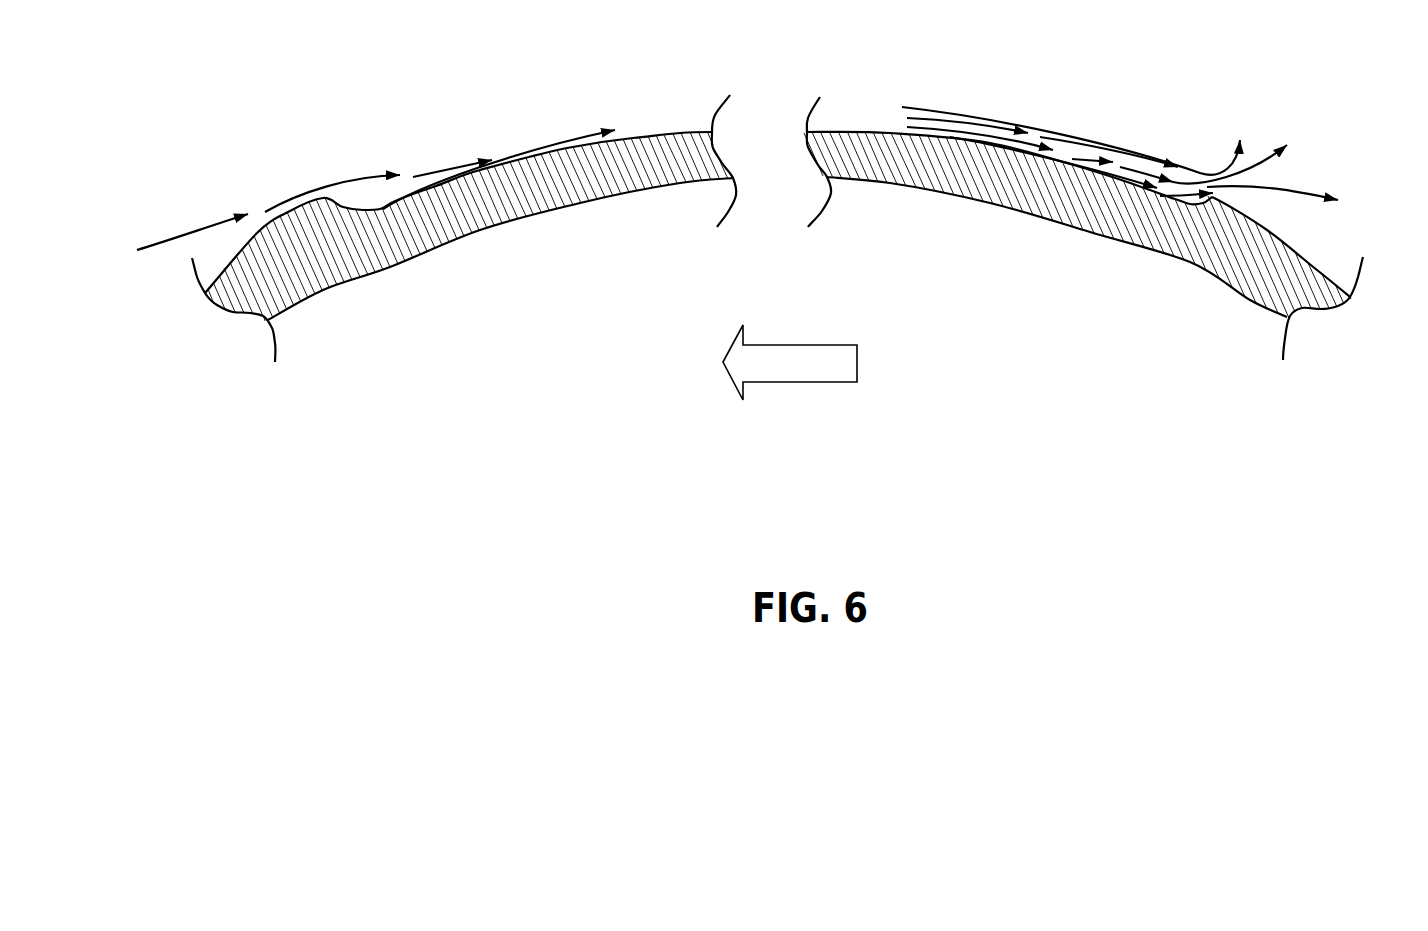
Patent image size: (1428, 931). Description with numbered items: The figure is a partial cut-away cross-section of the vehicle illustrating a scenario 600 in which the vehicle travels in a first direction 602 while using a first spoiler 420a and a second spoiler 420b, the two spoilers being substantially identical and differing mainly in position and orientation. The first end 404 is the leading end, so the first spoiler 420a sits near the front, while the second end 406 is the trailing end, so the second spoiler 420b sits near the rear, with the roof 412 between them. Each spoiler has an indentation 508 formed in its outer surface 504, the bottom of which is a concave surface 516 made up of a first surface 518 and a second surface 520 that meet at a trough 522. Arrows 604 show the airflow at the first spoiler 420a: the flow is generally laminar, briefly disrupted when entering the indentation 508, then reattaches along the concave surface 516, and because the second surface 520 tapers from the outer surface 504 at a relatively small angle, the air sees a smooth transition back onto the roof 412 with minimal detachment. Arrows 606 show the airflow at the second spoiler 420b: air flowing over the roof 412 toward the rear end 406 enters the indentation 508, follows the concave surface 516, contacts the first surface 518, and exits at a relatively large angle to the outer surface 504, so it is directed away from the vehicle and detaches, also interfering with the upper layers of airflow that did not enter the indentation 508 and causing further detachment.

The scenario 600 is at (178, 152).
The arrows 604 is at (297, 180).
The arrows 606 is at (1260, 118).
The first direction 602 is at (808, 374).
The first end 404 is at (245, 308).
The second end 406 is at (1280, 292).
The roof 412 is at (677, 183).
The first spoiler 420a is at (510, 284).
The second spoiler 420b is at (1042, 302).
The outer surface 504 is at (640, 133).
The indentation 508 is at (414, 213).
The concave surface 516 is at (515, 198).
The first surface 518 is at (1216, 200).
The second surface 520 is at (525, 172).
The trough 522 is at (1192, 205).